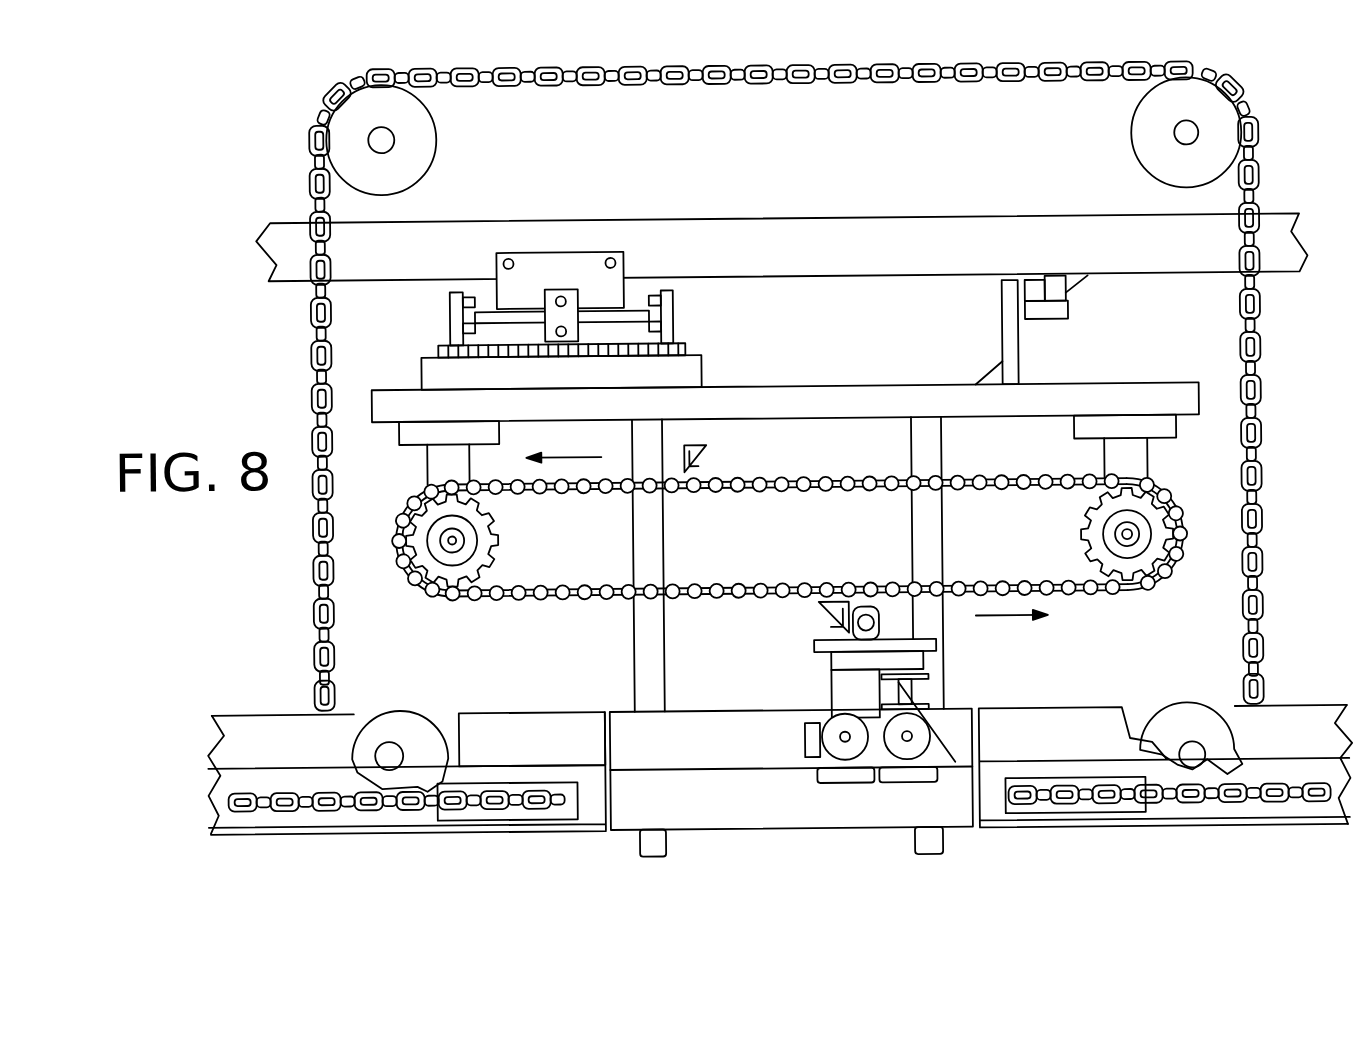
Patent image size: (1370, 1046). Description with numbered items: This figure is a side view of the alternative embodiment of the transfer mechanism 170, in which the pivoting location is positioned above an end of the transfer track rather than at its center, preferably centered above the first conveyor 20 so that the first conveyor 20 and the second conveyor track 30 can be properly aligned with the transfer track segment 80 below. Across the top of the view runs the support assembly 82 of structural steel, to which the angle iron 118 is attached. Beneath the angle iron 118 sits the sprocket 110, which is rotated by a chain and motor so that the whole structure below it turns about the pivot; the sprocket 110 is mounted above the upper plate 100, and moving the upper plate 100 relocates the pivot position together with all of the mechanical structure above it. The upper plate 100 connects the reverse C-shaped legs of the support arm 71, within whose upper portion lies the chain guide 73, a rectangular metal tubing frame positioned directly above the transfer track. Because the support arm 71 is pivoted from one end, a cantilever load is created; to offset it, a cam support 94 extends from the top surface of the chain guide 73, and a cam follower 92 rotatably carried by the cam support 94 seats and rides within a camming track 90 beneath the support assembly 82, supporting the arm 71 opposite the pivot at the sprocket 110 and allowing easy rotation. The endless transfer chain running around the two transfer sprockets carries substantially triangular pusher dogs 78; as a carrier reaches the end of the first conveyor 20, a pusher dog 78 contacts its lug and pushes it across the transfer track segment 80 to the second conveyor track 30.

The transfer mechanism 170 is at (208, 193).
The support assembly 82 is at (800, 225).
The angle irons 118 is at (578, 256).
The sprocket 110 is at (690, 346).
The upper plate 100 is at (697, 374).
The cam support 94 is at (1008, 308).
The cam follower 92 is at (1037, 279).
The camming track 90 is at (1057, 309).
The chain guide 73 is at (420, 392).
The support arm 71 is at (933, 464).
The pusher dogs 78 is at (710, 462).
The first conveyor 20 is at (253, 719).
The transfer track segment 80 is at (760, 803).
The second conveyor track 30 is at (1330, 720).